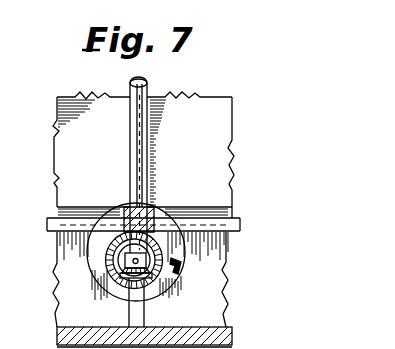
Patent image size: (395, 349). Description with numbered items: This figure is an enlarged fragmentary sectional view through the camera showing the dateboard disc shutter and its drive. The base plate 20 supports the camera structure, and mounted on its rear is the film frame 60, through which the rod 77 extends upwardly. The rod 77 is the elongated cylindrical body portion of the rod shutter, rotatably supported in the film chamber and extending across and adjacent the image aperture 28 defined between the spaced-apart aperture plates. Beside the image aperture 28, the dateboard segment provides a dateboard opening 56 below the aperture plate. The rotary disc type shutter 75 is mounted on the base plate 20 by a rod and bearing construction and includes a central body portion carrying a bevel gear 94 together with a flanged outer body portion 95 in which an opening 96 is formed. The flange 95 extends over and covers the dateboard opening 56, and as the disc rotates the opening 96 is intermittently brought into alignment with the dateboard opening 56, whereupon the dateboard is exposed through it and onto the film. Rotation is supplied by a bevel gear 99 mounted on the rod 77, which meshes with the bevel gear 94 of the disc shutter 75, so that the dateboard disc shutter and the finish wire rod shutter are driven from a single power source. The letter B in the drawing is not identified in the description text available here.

The base plate 20 is at (230, 312).
The image aperture 28 is at (147, 113).
The dateboard opening 56 is at (150, 216).
The film frame 60 is at (230, 338).
The rotary disc type shutter 75 is at (87, 274).
The elongated cylindrical body portion 77 is at (135, 145).
The bevel gear 94 is at (120, 256).
The flanged outer body portion 95 is at (161, 298).
The opening 96 is at (178, 268).
The bevel gear 99 is at (111, 296).
The bearing assembly B is at (160, 180).